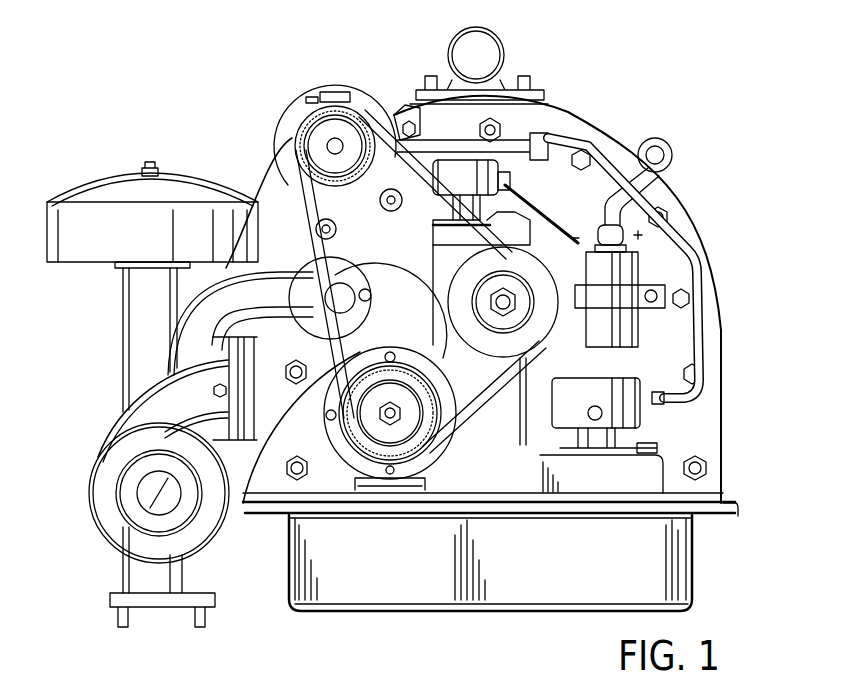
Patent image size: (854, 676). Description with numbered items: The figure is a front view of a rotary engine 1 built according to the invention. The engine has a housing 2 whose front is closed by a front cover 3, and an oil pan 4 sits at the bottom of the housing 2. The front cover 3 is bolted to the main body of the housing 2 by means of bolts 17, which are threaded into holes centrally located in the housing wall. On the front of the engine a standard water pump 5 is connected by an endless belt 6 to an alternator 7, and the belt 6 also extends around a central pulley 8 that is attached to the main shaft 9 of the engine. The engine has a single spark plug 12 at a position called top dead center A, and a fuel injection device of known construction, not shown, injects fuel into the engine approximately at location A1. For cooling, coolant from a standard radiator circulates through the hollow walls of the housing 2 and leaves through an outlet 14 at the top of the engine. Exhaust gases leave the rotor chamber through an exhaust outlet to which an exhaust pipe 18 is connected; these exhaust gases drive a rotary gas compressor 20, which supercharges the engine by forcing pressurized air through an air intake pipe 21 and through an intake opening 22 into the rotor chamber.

The rotary engine 1 is at (110, 316).
The housing 2 is at (281, 193).
The front cover 3 is at (288, 248).
The oil pan 4 is at (661, 573).
The water pump 5 is at (360, 432).
The endless belt 6 is at (346, 420).
The alternator 7 is at (300, 110).
The central pulley 8 is at (505, 305).
The main shaft 9 is at (508, 308).
The spark plug 12 is at (667, 145).
The outlet 14 is at (481, 58).
The bolts 17 is at (290, 152).
The exhaust pipe 18 is at (118, 413).
The rotary gas compressor 20 is at (104, 455).
The air intake pipe 21 is at (228, 337).
The intake opening 22 is at (503, 308).
The top dead center A is at (651, 143).
The fuel injection location A1 is at (362, 80).